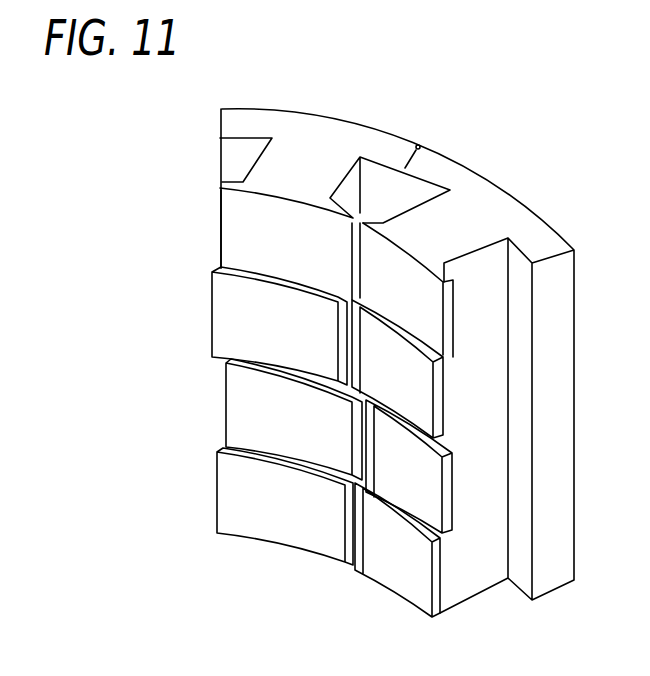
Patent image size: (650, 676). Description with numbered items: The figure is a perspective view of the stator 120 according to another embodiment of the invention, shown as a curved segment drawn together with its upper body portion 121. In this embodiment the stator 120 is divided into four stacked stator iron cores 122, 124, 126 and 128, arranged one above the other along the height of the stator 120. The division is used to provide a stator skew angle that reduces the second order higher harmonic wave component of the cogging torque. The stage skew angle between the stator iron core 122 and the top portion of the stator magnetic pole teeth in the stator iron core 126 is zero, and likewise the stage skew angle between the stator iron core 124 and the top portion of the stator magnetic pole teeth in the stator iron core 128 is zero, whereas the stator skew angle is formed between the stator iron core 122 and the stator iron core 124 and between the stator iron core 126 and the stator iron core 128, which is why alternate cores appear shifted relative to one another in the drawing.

The stator 120 is at (536, 186).
The yoke portion 121 is at (288, 126).
The stator iron core 122 is at (230, 233).
The stator iron core 124 is at (230, 316).
The stator iron core 126 is at (233, 408).
The stator iron core 128 is at (228, 495).